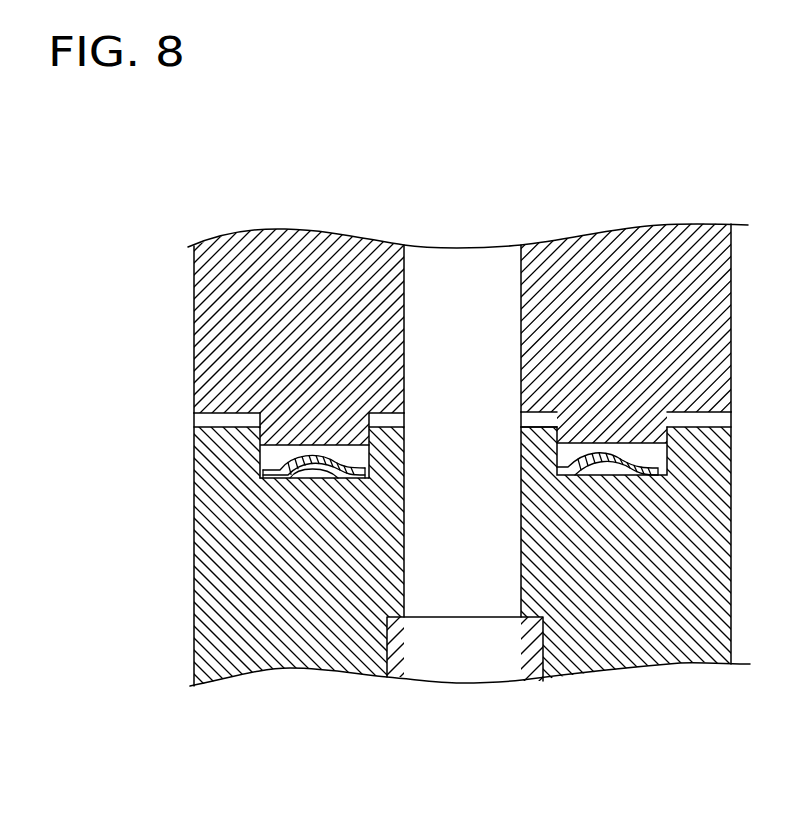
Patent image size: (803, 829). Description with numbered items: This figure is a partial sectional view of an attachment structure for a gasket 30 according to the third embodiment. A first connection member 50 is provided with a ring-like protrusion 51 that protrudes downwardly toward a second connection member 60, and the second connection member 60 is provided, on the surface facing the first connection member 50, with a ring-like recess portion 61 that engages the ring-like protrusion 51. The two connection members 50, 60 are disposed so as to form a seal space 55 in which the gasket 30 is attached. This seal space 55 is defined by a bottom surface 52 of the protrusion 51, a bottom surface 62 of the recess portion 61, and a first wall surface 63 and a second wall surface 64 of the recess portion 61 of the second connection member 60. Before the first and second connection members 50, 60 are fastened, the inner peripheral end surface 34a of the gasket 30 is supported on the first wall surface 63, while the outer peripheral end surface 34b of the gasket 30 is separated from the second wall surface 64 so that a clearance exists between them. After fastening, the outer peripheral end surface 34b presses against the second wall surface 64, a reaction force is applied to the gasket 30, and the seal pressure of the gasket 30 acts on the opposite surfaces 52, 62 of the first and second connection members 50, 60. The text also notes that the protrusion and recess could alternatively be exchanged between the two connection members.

The gasket 30 is at (283, 481).
The inner peripheral end surface 34a is at (385, 474).
The outer peripheral end surface 34b is at (265, 475).
The first connection member 50 is at (205, 277).
The ring-like protrusion 51 is at (279, 455).
The bottom surface of the protrusion 52 is at (340, 450).
The seal space 55 is at (262, 413).
The second connection member 60 is at (217, 560).
The ring-like recess portion 61 is at (362, 500).
The bottom surface of the recess portion 62 is at (303, 470).
The first wall surface 63 is at (366, 458).
The second wall surface 64 is at (263, 437).